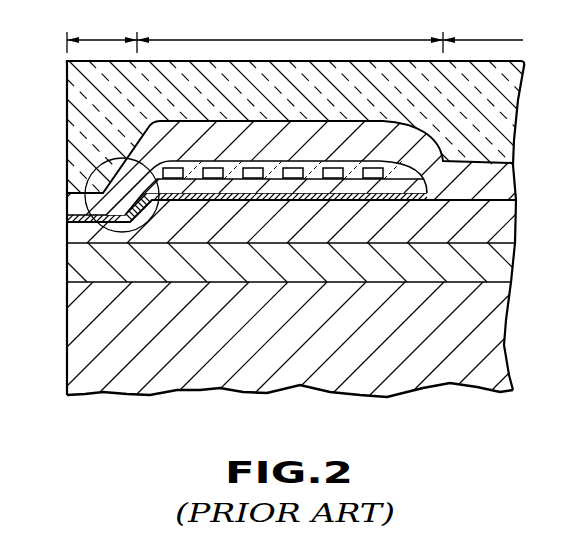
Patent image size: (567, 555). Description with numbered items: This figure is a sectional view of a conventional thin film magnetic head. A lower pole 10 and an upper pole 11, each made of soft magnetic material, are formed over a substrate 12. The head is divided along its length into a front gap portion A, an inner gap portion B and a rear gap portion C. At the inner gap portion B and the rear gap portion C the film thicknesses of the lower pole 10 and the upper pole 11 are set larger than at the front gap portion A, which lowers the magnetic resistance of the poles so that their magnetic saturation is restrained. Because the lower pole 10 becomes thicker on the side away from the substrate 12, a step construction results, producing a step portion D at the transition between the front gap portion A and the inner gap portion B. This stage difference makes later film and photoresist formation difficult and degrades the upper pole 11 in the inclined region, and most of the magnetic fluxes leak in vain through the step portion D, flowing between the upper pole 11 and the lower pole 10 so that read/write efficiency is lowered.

The lower pole 10 is at (72, 234).
The upper pole 11 is at (82, 205).
The substrate 12 is at (243, 366).
The step portion D is at (96, 169).
The front gap portion A is at (102, 34).
The inner gap portion B is at (290, 34).
The rear gap portion C is at (483, 29).